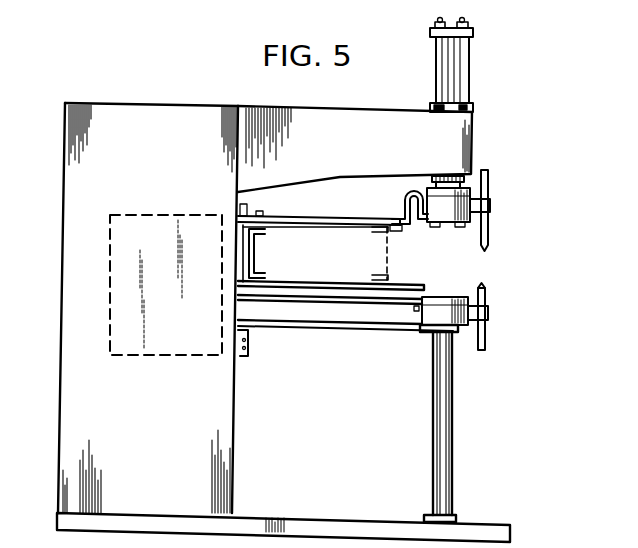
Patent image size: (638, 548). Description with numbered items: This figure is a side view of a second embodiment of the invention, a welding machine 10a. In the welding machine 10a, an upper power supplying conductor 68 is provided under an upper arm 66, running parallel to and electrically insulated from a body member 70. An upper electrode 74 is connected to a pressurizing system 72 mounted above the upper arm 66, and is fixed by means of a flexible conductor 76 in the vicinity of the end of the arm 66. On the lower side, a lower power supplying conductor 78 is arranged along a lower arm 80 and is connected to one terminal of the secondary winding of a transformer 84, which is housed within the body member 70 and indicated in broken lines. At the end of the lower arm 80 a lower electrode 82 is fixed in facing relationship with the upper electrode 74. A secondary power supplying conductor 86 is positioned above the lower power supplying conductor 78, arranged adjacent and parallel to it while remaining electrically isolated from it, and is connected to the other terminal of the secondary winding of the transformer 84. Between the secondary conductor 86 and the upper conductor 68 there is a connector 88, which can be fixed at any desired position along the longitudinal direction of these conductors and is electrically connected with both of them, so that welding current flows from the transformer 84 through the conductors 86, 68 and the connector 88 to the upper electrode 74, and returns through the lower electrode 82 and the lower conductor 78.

The welding machine 10a is at (553, 118).
The upper arm 66 is at (460, 147).
The upper power supplying conductor 68 is at (313, 216).
The body member 70 is at (176, 122).
The pressurizing system 72 is at (462, 69).
The upper electrode 74 is at (491, 226).
The flexible conductor 76 is at (404, 204).
The lower power supplying conductor 78 is at (322, 301).
The lower arm 80 is at (374, 330).
The lower electrode 82 is at (490, 301).
The transformer 84 is at (130, 287).
The secondary power supplying conductor 86 is at (326, 285).
The connector 88 is at (258, 248).